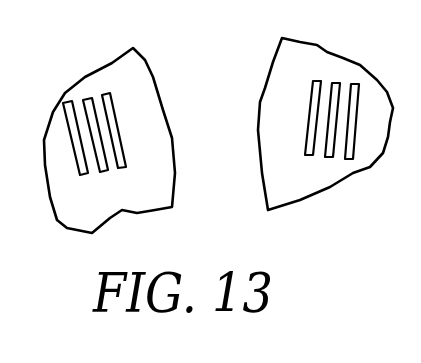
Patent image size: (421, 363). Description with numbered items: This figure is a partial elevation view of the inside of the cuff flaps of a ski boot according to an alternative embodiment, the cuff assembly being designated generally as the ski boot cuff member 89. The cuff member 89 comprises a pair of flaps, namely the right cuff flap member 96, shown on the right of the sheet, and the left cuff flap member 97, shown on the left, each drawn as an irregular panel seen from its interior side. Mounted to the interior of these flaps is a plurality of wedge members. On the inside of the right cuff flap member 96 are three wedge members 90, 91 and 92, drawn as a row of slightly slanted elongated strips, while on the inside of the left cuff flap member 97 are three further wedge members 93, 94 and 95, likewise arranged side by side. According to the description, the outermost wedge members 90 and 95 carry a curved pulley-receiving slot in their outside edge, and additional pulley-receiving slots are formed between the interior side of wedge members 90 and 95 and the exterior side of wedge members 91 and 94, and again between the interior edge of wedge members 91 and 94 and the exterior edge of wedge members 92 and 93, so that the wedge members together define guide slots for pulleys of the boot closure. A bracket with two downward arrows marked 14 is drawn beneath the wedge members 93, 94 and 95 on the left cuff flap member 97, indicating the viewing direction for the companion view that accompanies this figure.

The ski boot cuff member 89 is at (203, 80).
The wedge member 90 is at (350, 160).
The wedge member 91 is at (322, 155).
The wedge member 92 is at (308, 145).
The wedge member 93 is at (104, 92).
The wedge member 94 is at (86, 97).
The wedge member 95 is at (67, 101).
The right cuff flap member 96 is at (275, 85).
The left cuff flap member 97 is at (145, 100).
The element 14 (direction indicator) 14 is at (77, 211).